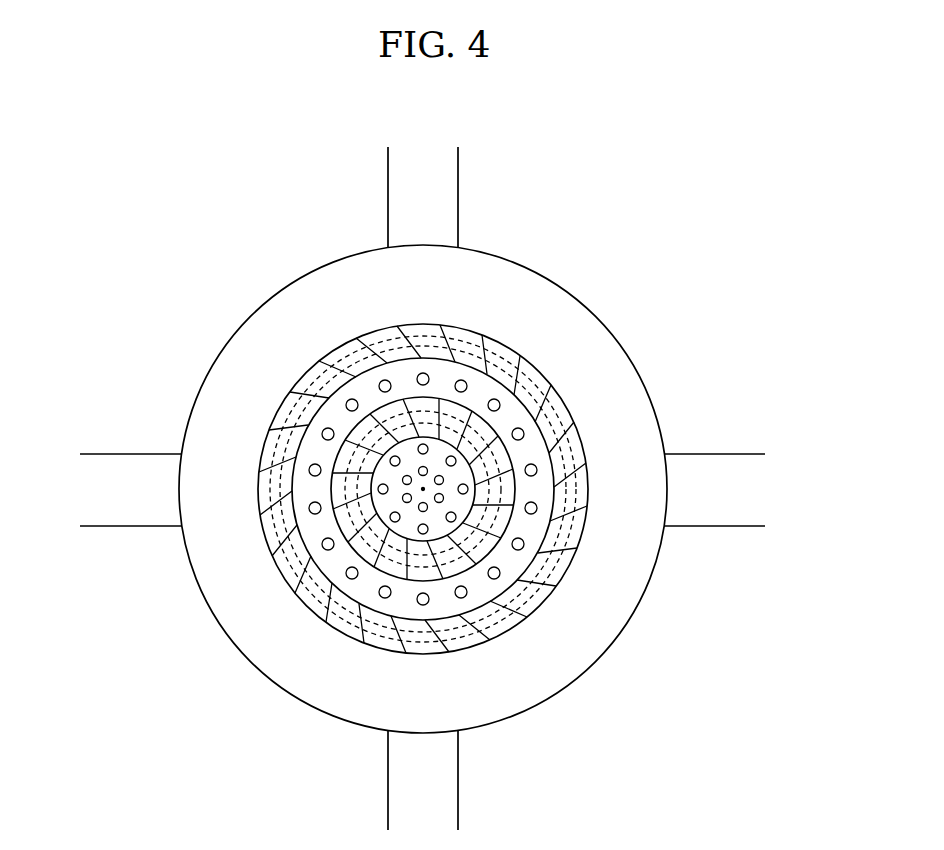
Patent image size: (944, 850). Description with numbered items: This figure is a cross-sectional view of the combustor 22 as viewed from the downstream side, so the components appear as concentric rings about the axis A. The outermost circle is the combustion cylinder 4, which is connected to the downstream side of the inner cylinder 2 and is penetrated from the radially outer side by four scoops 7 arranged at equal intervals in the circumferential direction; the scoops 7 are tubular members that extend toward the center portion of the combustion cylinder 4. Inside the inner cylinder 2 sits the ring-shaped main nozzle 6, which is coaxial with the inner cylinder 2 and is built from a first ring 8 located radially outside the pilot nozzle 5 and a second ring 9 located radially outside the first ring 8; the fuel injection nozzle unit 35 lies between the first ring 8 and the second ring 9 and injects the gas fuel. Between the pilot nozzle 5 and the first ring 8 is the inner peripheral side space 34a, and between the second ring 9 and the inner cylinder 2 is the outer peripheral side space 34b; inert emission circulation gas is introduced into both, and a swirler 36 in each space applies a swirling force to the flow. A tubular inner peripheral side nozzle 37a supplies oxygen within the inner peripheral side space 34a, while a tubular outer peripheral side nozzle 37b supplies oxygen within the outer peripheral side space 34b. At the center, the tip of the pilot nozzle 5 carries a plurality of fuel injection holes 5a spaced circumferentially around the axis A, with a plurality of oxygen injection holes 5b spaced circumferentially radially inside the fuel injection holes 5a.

The combustor 22 is at (222, 220).
The combustion cylinder 4 is at (610, 325).
The scoop 7 is at (459, 168).
The inner cylinder 2 is at (383, 327).
The main nozzle 6 is at (510, 347).
The outer peripheral side space 34b is at (510, 637).
The fuel injection nozzle unit 35 is at (462, 363).
The swirler 36 is at (383, 420).
The outer peripheral side nozzle 37b is at (577, 520).
The second ring 9 is at (535, 547).
The inner peripheral side space 34a is at (337, 452).
The first ring 8 is at (497, 548).
The inner peripheral side nozzle 37a is at (390, 560).
The pilot nozzle 5 is at (473, 447).
The fuel injection holes 5a is at (397, 517).
The oxygen injection holes 5b is at (438, 500).
The axis A is at (423, 489).